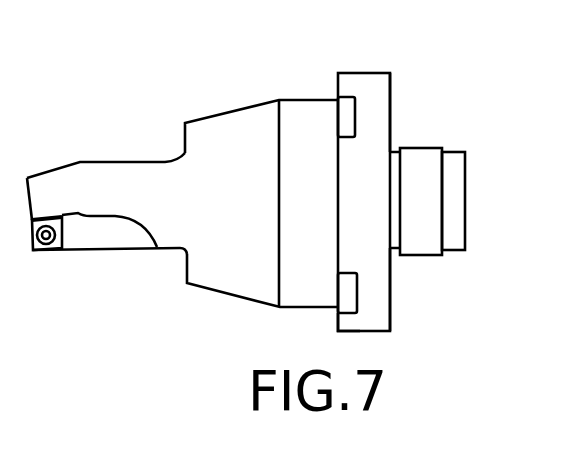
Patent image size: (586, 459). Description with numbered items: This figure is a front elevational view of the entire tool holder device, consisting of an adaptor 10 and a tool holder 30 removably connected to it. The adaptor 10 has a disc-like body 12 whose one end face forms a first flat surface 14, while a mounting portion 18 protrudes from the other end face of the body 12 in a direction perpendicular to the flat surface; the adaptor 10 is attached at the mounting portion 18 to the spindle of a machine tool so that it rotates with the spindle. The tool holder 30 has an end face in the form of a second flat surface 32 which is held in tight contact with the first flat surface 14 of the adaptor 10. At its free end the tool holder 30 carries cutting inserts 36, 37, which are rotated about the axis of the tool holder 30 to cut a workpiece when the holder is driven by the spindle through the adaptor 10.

The adaptor 10 is at (415, 113).
The body 12 is at (377, 80).
The first flat surface 14 is at (338, 325).
The mounting portion 18 is at (458, 203).
The tool holder 30 is at (213, 108).
The second flat surface 32 is at (340, 253).
The cutting insert 36 is at (38, 251).
The cutting insert 37 is at (41, 176).